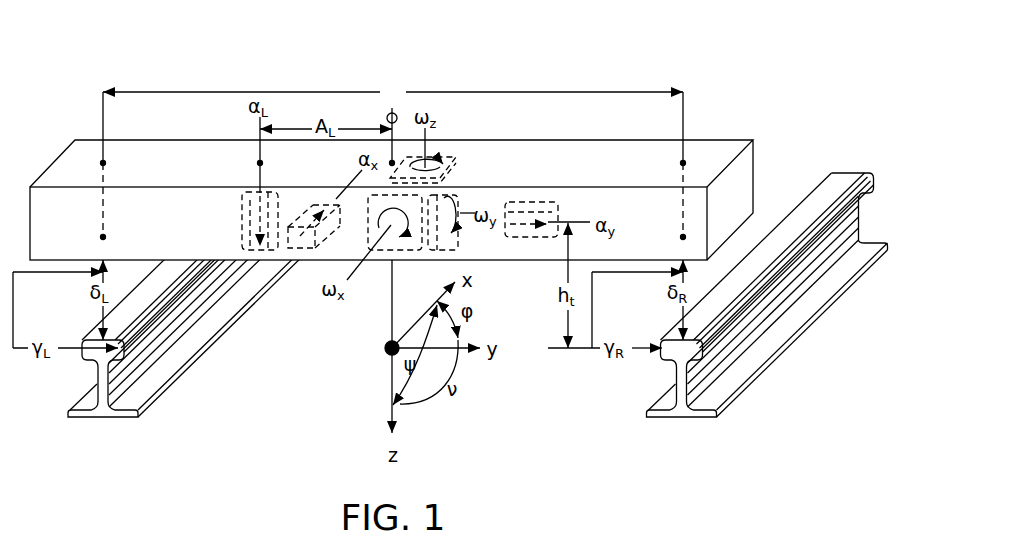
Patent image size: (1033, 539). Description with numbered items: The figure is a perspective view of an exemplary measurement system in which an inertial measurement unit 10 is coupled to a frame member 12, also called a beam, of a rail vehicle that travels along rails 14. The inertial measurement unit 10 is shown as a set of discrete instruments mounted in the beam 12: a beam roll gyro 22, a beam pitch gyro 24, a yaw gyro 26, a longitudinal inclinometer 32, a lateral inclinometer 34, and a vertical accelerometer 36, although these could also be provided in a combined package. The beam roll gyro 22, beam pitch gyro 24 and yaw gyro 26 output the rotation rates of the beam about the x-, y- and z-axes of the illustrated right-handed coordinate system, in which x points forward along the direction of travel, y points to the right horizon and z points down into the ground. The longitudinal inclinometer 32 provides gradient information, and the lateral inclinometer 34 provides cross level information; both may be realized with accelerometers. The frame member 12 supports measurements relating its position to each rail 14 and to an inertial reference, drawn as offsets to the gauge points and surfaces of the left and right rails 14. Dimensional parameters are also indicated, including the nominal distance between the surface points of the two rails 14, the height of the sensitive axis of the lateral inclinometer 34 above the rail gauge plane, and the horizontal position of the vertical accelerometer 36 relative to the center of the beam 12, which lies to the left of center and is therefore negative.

The inertial measurement unit 10 is at (528, 86).
The frame member 12 is at (725, 141).
The rails 14 is at (100, 418).
The beam roll gyro 22 is at (407, 256).
The beam pitch gyro 24 is at (450, 236).
The yaw gyro 26 is at (456, 157).
The longitudinal inclinometer 32 is at (300, 262).
The lateral inclinometer 34 is at (546, 200).
The vertical accelerometer 36 is at (240, 216).